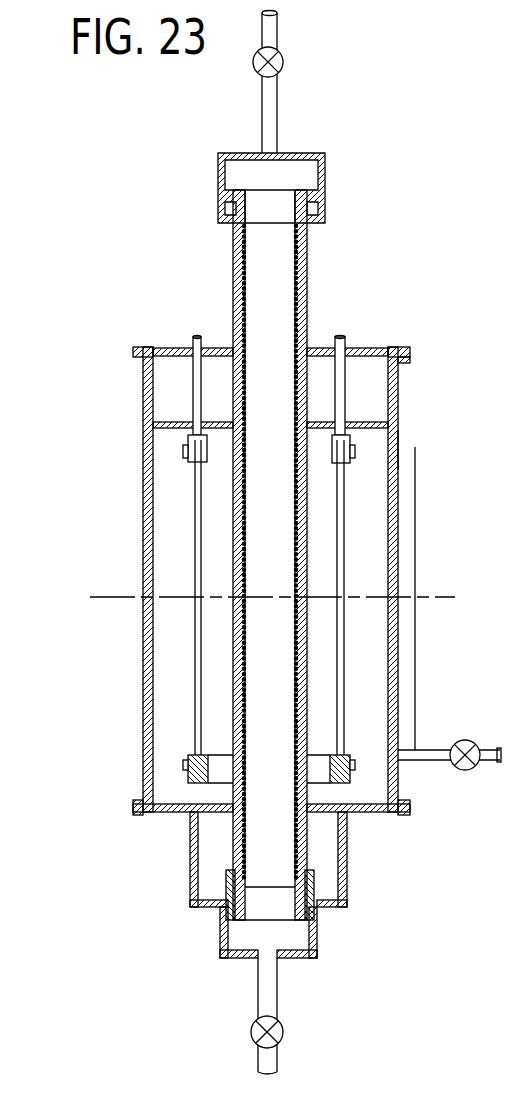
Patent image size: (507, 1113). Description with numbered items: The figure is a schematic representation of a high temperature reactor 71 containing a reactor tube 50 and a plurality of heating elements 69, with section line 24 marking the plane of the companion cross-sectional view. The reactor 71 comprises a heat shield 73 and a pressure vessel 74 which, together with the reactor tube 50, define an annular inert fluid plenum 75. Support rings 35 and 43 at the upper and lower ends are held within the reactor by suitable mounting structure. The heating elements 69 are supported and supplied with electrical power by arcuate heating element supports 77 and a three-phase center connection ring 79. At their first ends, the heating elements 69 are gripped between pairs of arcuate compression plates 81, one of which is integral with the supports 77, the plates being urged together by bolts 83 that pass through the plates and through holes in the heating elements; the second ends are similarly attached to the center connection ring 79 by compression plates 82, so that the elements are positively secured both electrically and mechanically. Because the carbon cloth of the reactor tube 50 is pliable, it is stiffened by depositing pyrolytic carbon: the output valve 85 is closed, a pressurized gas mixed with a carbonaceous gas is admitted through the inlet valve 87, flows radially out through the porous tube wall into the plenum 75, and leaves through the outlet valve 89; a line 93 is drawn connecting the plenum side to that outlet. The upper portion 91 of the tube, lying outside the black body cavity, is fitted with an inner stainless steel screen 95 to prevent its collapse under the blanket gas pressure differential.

The section line 24- 24 is at (102, 612).
The support ring 35 is at (322, 193).
The support ring 43 is at (312, 880).
The reactor tube 50 is at (305, 548).
The heating elements 69 is at (195, 668).
The reactor 71 is at (116, 391).
The heat shield 73 is at (390, 458).
The pressure vessel 74 is at (398, 516).
The plenum 75 is at (160, 500).
The heating element supports 77 is at (164, 440).
The center connection ring 79 is at (348, 800).
The compression plates 81 is at (190, 465).
The compression plates 82 is at (192, 755).
The bolts 83 is at (183, 766).
The valve 85 is at (280, 1022).
The valve 87 is at (283, 54).
The valve 89 is at (466, 771).
The portion of the reactor tube 91 is at (348, 275).
The bypass line 93 is at (423, 640).
The inner stainless steel screen 95 is at (306, 303).